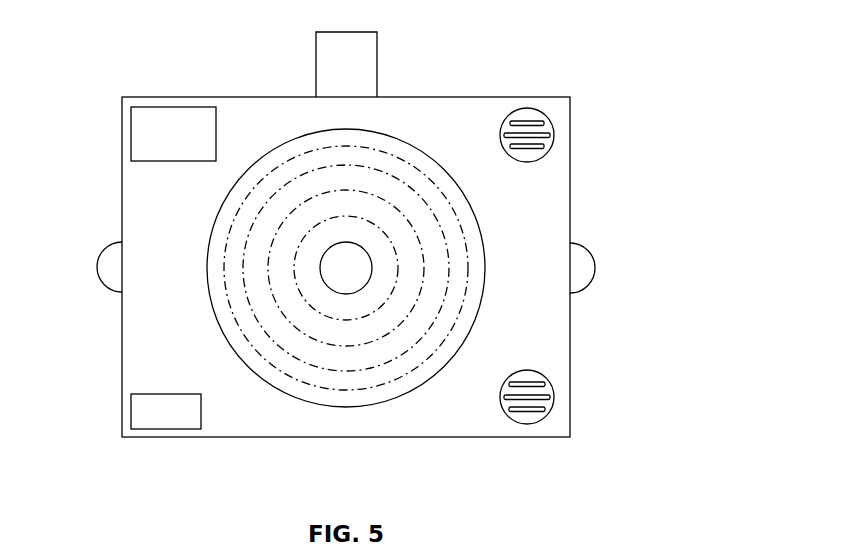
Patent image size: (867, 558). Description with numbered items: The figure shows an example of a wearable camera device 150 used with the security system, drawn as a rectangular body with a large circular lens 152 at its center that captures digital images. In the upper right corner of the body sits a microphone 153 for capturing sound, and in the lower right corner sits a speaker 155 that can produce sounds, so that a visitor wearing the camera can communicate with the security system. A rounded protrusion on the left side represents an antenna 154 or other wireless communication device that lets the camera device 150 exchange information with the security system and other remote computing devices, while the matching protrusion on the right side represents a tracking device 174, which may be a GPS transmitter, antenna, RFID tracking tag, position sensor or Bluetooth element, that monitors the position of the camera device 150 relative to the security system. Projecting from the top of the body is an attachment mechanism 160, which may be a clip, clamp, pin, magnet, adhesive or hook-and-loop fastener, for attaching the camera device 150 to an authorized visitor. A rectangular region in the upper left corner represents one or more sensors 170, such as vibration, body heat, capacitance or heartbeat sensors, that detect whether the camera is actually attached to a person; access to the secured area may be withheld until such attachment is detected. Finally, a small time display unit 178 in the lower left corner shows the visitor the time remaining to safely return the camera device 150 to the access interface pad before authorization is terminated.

The camera device 150 is at (620, 58).
The lens 152 is at (345, 268).
The microphone 153 is at (554, 135).
The antenna 154 is at (97, 268).
The speaker 155 is at (555, 397).
The attachment mechanism 160 is at (347, 31).
The sensors 170 is at (152, 108).
The tracking device 174 is at (595, 283).
The time display unit 178 is at (128, 410).